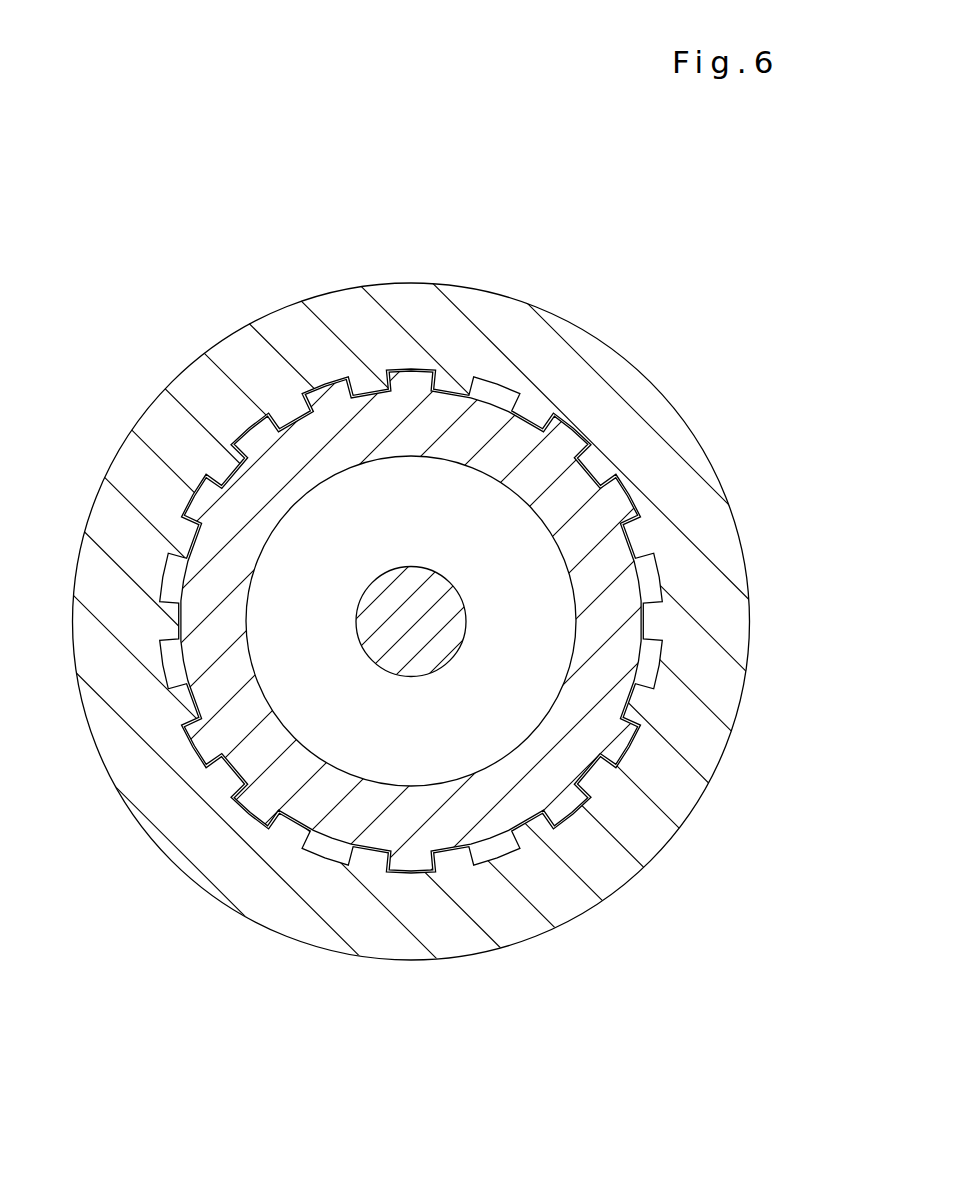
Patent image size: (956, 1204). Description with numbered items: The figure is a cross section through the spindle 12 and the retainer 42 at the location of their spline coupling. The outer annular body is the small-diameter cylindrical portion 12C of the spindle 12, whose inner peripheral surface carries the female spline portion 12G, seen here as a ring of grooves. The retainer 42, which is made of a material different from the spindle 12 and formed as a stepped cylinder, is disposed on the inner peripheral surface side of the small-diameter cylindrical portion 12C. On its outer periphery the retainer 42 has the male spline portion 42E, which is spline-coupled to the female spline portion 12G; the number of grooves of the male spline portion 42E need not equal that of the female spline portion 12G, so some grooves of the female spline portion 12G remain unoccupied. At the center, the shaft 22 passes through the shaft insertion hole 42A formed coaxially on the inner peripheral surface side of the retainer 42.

The spindle 12 is at (410, 276).
The small-diameter cylindrical portion 12C is at (612, 425).
The female spline portion 12G is at (336, 826).
The shaft 22 is at (410, 623).
The retainer 42 is at (305, 445).
The shaft insertion hole 42A is at (572, 575).
The male spline portion 42E is at (197, 745).